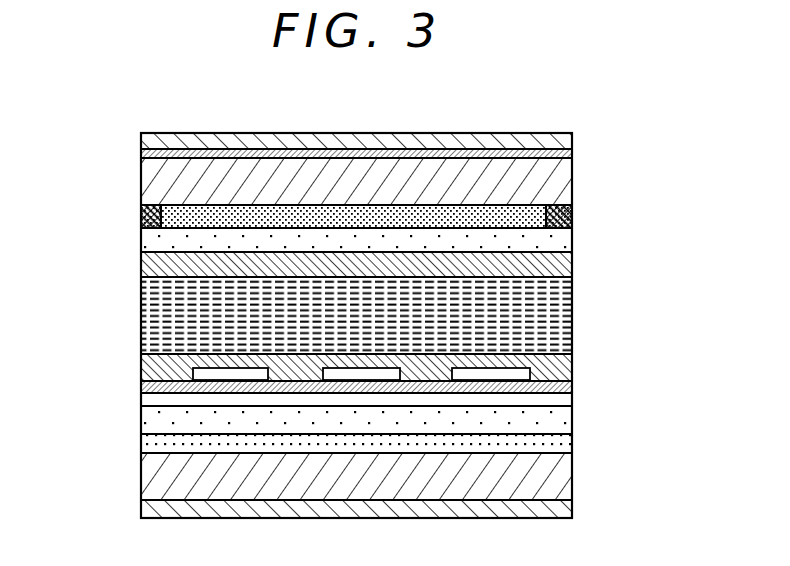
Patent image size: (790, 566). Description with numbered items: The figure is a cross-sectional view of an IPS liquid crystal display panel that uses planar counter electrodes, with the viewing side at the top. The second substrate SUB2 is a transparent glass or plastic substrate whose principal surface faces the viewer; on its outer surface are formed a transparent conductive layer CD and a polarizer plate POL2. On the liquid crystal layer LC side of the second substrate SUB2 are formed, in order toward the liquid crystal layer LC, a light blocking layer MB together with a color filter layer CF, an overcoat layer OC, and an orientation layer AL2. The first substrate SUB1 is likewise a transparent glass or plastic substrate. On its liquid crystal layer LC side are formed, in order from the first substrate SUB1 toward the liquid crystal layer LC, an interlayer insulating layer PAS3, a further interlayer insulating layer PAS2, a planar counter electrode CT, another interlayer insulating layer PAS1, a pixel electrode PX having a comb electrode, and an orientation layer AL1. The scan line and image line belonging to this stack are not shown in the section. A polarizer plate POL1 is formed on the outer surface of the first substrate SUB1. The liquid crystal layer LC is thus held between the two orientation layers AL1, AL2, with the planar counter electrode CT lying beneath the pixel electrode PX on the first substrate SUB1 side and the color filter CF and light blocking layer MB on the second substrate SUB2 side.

The polarizer plate POL2 is at (575, 150).
The transparent conductive layer CD is at (140, 152).
The second substrate SUB2 is at (563, 184).
The color filter layer CF is at (377, 222).
The light blocking layer MB is at (141, 214).
The overcoat layer OC is at (563, 238).
The orientation layer AL2 is at (565, 260).
The liquid crystal layer LC is at (142, 285).
The orientation layer AL1 is at (565, 364).
The pixel electrode PX is at (465, 370).
The interlayer insulating layer PAS1 is at (142, 386).
The planar counter electrode CT is at (565, 400).
The interlayer insulating layer PAS2 is at (142, 424).
The interlayer insulating layer PAS3 is at (565, 445).
The first substrate SUB1 is at (565, 478).
The polarizer plate POL1 is at (565, 511).